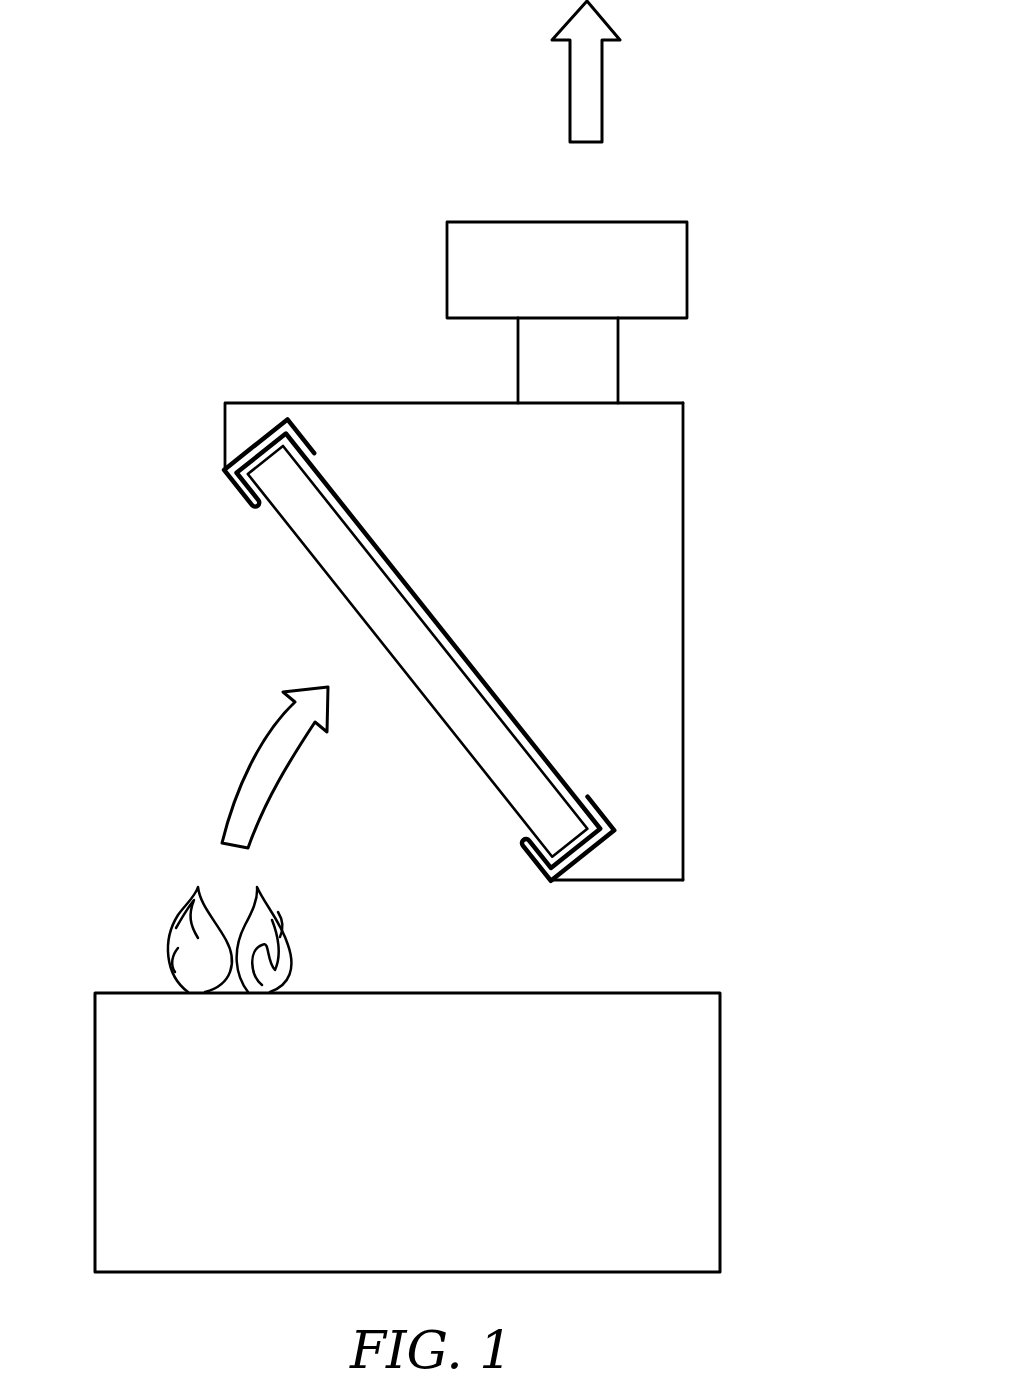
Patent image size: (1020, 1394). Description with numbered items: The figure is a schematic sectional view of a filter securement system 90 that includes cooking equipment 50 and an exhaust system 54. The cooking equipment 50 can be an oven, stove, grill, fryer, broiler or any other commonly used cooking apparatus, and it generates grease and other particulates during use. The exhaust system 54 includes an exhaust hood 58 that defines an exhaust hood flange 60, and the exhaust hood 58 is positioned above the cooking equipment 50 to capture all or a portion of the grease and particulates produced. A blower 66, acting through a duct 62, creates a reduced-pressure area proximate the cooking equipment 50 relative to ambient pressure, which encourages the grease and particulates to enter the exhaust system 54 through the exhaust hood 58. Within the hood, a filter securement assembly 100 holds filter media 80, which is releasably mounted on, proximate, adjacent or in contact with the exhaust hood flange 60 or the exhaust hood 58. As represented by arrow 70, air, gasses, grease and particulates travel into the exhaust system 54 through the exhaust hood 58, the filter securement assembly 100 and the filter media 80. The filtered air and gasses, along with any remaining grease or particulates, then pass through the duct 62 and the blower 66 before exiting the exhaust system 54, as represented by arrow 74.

The cooking equipment 50 is at (666, 993).
The exhaust system 54 is at (745, 418).
The exhaust hood 58 is at (683, 720).
The exhaust hood flange 60 is at (233, 482).
The duct 62 is at (620, 362).
The blower 66 is at (688, 272).
The arrow 70 is at (260, 748).
The arrow 74 is at (602, 90).
The filter media 80 is at (308, 542).
The filter securement system 90 is at (150, 630).
The filter securement assembly 100 is at (438, 525).